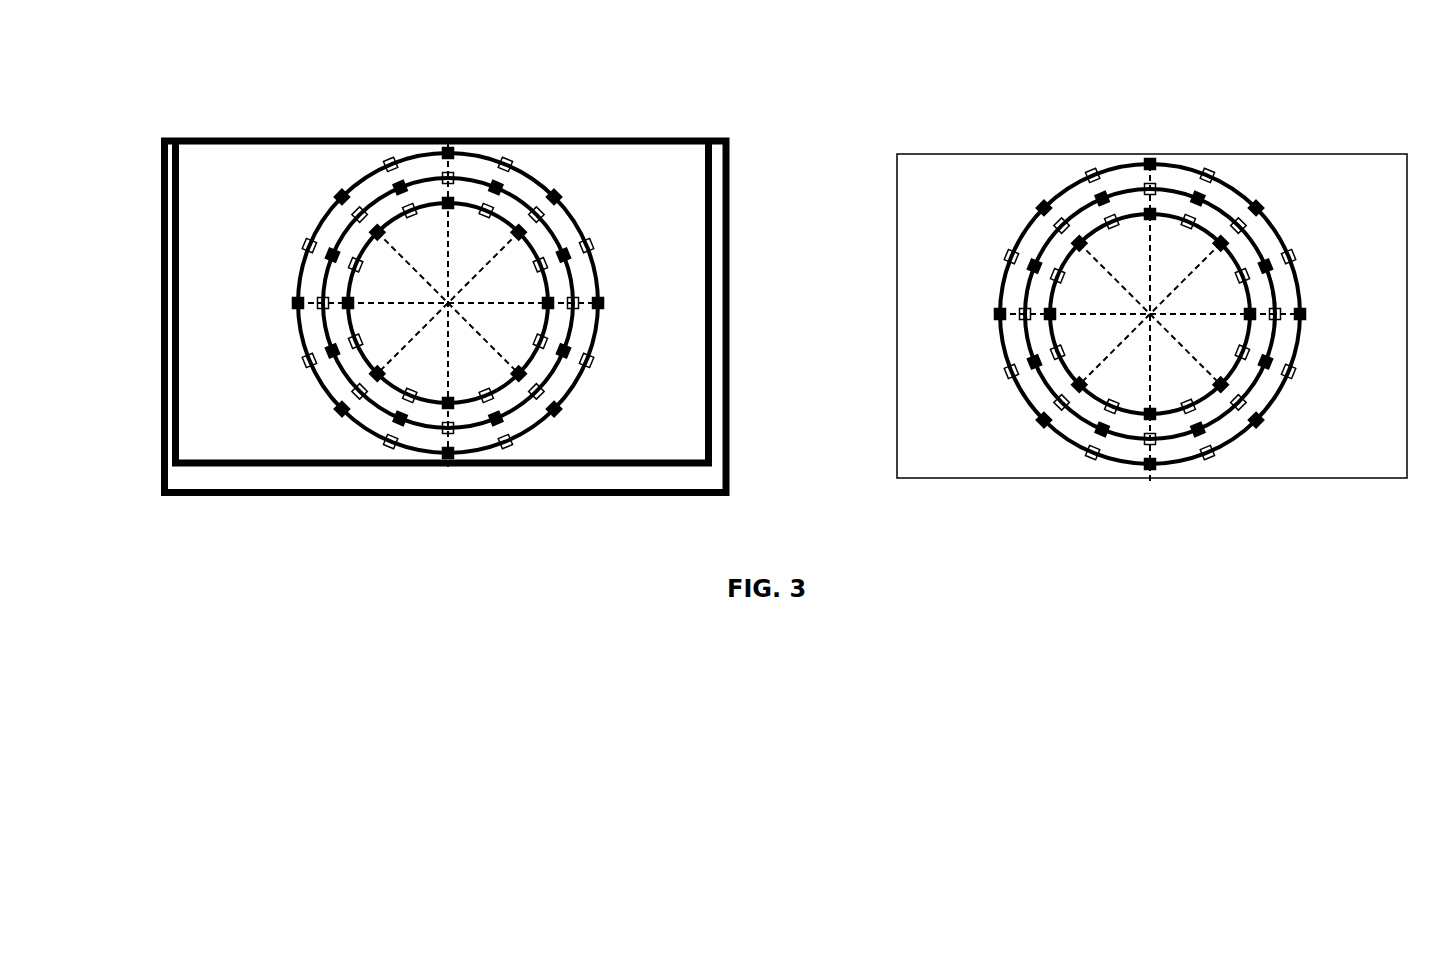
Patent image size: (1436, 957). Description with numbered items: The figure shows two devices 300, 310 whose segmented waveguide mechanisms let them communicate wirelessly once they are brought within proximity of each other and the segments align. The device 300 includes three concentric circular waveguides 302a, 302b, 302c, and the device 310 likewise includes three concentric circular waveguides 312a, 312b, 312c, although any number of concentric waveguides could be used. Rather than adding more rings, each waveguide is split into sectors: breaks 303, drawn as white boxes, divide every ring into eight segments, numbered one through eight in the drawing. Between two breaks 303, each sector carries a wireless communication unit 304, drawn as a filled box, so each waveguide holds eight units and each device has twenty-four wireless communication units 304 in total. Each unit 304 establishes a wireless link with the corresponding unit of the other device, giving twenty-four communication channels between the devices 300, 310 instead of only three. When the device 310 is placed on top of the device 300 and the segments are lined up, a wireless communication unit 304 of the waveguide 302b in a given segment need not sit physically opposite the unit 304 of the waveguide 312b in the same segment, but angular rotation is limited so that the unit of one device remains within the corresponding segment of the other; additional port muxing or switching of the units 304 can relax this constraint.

The device 300 is at (594, 54).
The device 310 is at (1265, 70).
The concentric circular waveguide 302a is at (392, 400).
The concentric circular waveguide 302b is at (343, 229).
The concentric circular waveguide 302c is at (358, 181).
The concentric circular waveguide 312a is at (1088, 404).
The concentric circular waveguide 312b is at (1050, 239).
The concentric circular waveguide 312c is at (1060, 200).
The break 303 is at (514, 165).
The wireless communication unit 304 is at (504, 190).